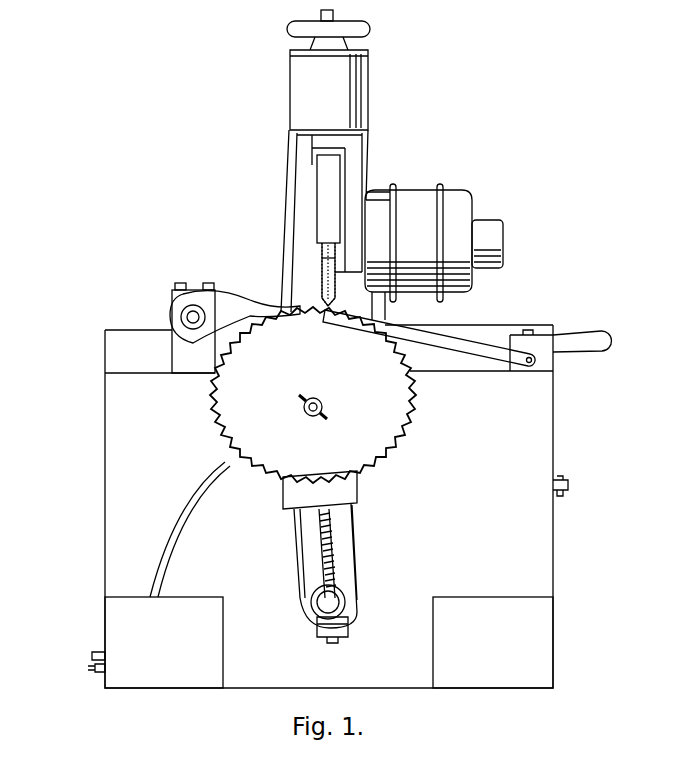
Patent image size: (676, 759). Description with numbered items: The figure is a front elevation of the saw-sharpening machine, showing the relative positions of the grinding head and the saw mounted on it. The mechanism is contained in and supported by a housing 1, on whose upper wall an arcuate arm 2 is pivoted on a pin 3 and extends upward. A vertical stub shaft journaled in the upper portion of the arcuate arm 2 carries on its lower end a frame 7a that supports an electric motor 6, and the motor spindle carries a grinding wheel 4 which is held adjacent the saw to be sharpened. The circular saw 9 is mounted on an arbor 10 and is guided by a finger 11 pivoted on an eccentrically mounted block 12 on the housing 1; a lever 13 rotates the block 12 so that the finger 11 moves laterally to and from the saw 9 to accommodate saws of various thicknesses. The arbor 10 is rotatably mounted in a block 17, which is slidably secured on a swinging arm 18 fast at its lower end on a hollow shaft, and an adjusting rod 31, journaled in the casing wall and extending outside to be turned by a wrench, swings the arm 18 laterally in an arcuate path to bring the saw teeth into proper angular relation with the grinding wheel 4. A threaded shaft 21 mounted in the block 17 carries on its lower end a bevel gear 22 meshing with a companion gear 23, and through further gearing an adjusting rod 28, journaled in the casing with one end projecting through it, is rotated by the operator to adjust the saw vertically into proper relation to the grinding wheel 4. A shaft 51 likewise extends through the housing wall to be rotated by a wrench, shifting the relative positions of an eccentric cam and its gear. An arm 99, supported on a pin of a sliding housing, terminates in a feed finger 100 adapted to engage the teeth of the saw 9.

The housing 1 is at (127, 418).
The arcuate arm 2 is at (288, 144).
The pin 3 is at (268, 292).
The grinding wheel 4 is at (318, 254).
The electric motor 6 is at (456, 206).
The frame 7a is at (349, 168).
The circular saw 9 is at (236, 386).
The arbor 10 is at (300, 404).
The finger 11 is at (478, 336).
The eccentrically mounted block 12 is at (535, 360).
The lever 13 is at (586, 332).
The block 17 is at (363, 480).
The swinging arm 18 is at (352, 538).
The threaded shaft 21 is at (330, 558).
The bevel gear 22 is at (347, 604).
The companion gear 23 is at (358, 583).
The adjusting rod 28 is at (98, 655).
The adjusting rod 31 is at (570, 487).
The shaft 51 is at (98, 672).
The arm 99 is at (226, 313).
The feed finger 100 is at (320, 263).